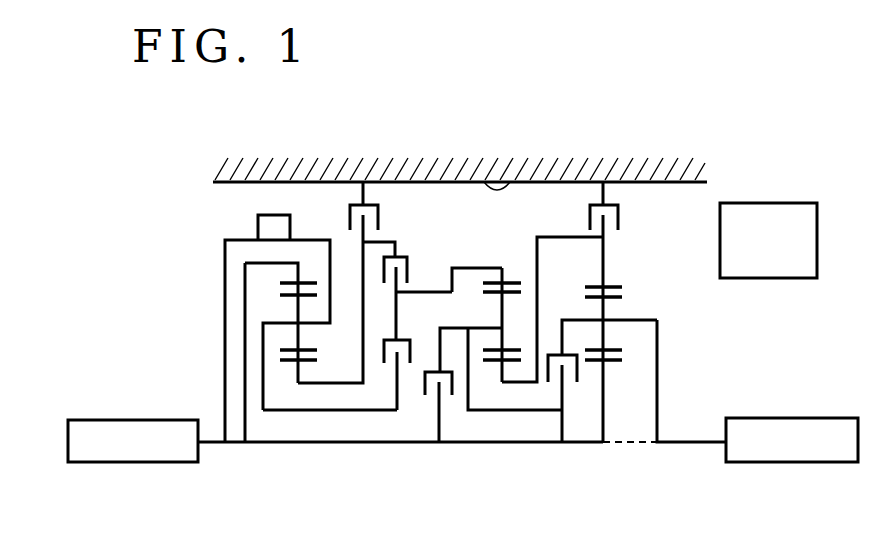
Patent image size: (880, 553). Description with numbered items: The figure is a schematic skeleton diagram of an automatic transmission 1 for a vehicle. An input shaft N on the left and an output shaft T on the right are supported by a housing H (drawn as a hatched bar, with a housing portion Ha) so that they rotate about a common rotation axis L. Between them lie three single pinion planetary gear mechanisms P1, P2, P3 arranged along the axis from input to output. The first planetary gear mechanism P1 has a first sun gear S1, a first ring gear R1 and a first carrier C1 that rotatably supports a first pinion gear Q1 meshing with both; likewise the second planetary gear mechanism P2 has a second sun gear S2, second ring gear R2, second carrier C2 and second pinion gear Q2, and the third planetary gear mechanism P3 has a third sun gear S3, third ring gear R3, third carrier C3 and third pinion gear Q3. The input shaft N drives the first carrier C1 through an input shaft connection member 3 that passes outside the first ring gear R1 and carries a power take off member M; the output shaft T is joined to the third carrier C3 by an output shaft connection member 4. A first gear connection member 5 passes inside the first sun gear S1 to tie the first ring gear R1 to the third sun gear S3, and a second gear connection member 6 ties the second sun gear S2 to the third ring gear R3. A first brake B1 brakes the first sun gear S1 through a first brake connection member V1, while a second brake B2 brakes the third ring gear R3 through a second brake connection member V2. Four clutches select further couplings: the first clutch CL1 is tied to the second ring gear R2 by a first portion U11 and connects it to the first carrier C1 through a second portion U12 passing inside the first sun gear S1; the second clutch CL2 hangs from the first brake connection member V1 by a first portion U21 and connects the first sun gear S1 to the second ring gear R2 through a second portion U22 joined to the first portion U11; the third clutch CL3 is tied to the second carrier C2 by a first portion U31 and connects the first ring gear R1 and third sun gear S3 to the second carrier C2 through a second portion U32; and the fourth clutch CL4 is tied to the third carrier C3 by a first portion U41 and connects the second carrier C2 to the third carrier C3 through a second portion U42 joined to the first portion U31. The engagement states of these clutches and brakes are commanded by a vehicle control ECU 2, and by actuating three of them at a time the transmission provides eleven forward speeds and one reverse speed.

The automatic transmission 1 is at (603, 142).
The vehicle control ECU 2 is at (752, 203).
The input shaft connection member 3 is at (223, 295).
The output shaft connection member 4 is at (660, 418).
The first gear connection member 5 is at (400, 375).
The second gear connection member 6 is at (548, 237).
The housing H is at (435, 170).
The housing portion Ha is at (517, 180).
The power take off member M is at (270, 215).
The input shaft N is at (148, 463).
The output shaft T is at (772, 463).
The rotation axis L is at (233, 443).
The first brake B1 is at (380, 209).
The second brake B2 is at (624, 215).
The first brake connection member V1 is at (362, 258).
The second brake connection member V2 is at (606, 222).
The first planetary gear mechanism P1 is at (320, 390).
The second planetary gear mechanism P2 is at (515, 372).
The third planetary gear mechanism P3 is at (637, 365).
The first ring gear R1 is at (305, 282).
The second ring gear R2 is at (505, 287).
The third ring gear R3 is at (612, 288).
The first carrier C1 is at (287, 320).
The second carrier C2 is at (502, 308).
The third carrier C3 is at (612, 315).
The first pinion gear Q1 is at (303, 343).
The second pinion gear Q2 is at (483, 352).
The third pinion gear Q3 is at (606, 338).
The first sun gear S1 is at (300, 365).
The second sun gear S2 is at (484, 363).
The third sun gear S3 is at (605, 363).
The first portion of first clutch connection member U11 is at (397, 301).
The second portion of first clutch connection member U12 is at (340, 415).
The first portion of second clutch connection member U21 is at (388, 242).
The second portion of second clutch connection member U22 is at (402, 290).
The first portion of third clutch connection member U31 is at (448, 327).
The second portion of third clutch connection member U32 is at (443, 429).
The first portion of fourth clutch connection member U41 is at (562, 334).
The second portion of fourth clutch connection member U42 is at (515, 384).
The first clutch CL1 is at (417, 355).
The second clutch CL2 is at (413, 271).
The third clutch CL3 is at (423, 385).
The fourth clutch CL4 is at (584, 371).